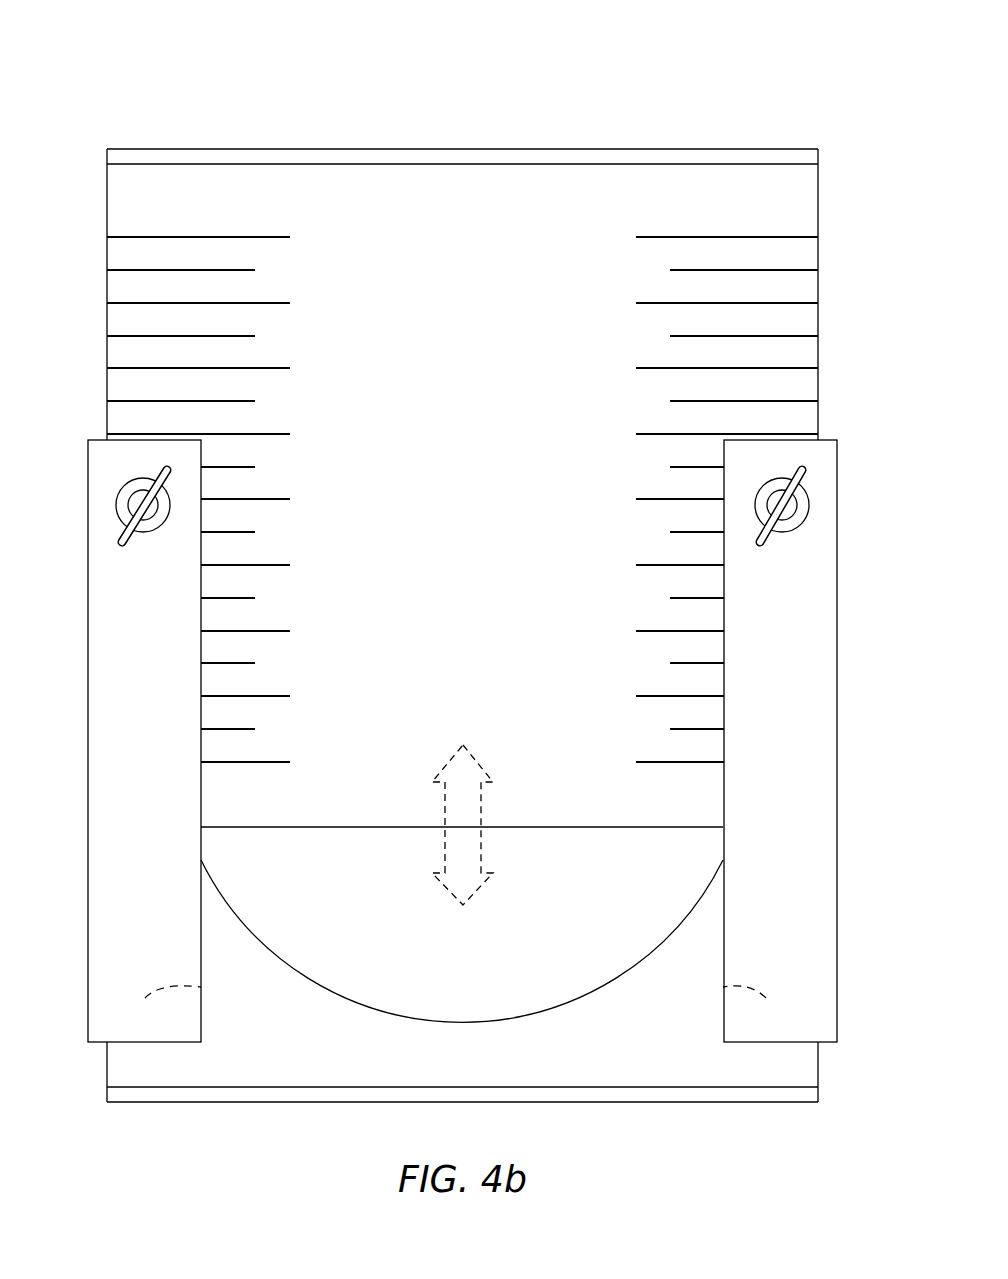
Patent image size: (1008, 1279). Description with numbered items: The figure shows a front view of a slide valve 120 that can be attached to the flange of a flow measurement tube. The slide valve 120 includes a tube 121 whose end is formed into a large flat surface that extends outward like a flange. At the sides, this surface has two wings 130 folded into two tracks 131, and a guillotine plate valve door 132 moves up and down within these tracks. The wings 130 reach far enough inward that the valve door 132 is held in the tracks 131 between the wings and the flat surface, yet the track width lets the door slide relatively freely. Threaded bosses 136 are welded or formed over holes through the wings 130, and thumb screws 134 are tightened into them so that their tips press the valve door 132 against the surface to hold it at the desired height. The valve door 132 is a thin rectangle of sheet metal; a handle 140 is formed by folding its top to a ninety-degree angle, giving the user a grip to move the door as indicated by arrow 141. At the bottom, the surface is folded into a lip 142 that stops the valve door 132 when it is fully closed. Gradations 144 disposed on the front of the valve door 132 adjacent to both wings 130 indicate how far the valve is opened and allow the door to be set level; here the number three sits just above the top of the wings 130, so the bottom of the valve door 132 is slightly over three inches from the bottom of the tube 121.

The slide valve 120 is at (202, 90).
The tube 121 is at (482, 983).
The wings 130 is at (115, 741).
The tracks 131 is at (201, 987).
The valve door 132 is at (490, 624).
The thumb screws 134 is at (128, 548).
The threaded bosses 136 is at (462, 543).
The handle 140 is at (497, 148).
The arrow 141 is at (481, 847).
The lip 142 is at (275, 1103).
The gradations 144 is at (348, 287).